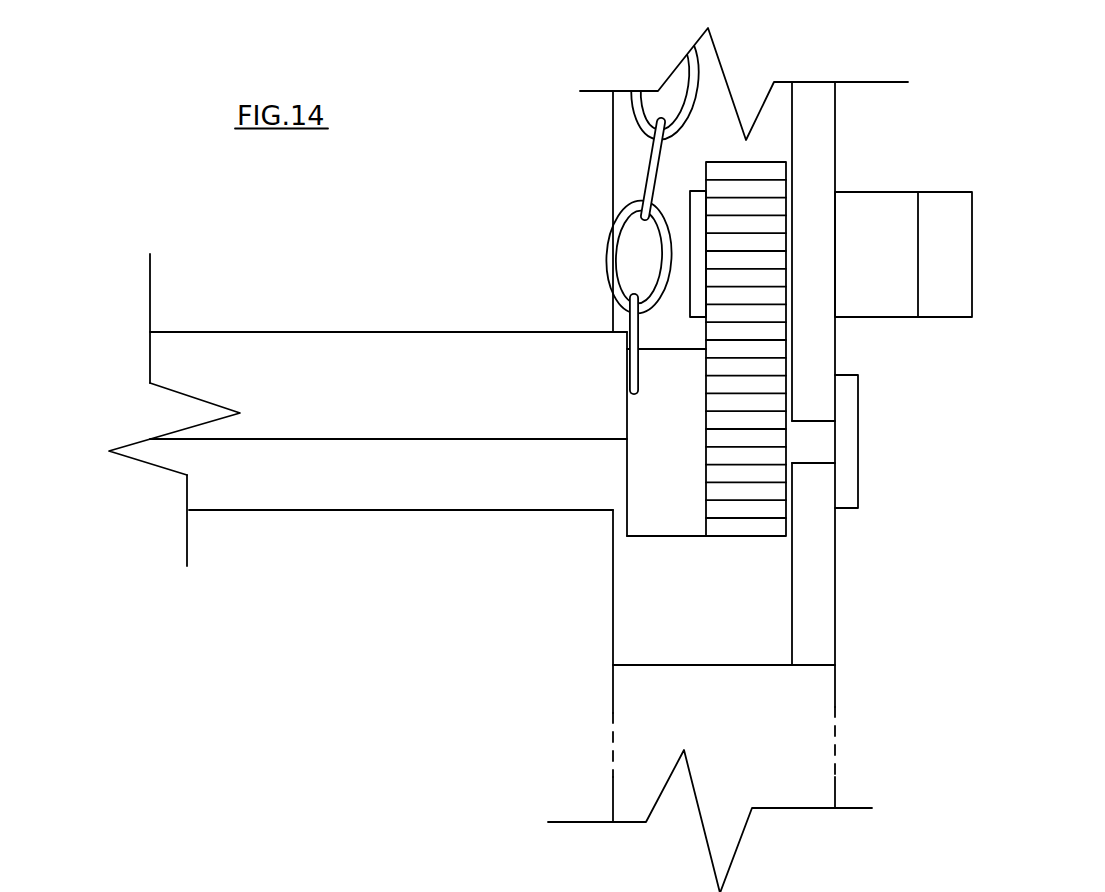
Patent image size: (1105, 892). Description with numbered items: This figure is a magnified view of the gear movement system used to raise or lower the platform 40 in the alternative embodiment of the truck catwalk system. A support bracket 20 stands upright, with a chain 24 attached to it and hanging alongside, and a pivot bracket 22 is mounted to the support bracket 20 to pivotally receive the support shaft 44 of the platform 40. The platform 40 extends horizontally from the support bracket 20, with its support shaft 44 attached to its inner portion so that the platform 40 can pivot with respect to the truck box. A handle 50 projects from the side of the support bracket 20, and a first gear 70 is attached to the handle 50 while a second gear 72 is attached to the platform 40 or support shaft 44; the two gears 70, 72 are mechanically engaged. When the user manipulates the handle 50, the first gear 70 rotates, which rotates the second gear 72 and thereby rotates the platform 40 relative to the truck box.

The support bracket 20 is at (835, 161).
The pivot bracket 22 is at (670, 537).
The chain 24 is at (608, 240).
The platform 40 is at (422, 330).
The support shaft 44 is at (438, 512).
The handle 50 is at (970, 238).
The first gear 70 is at (757, 162).
The second gear 72 is at (750, 537).